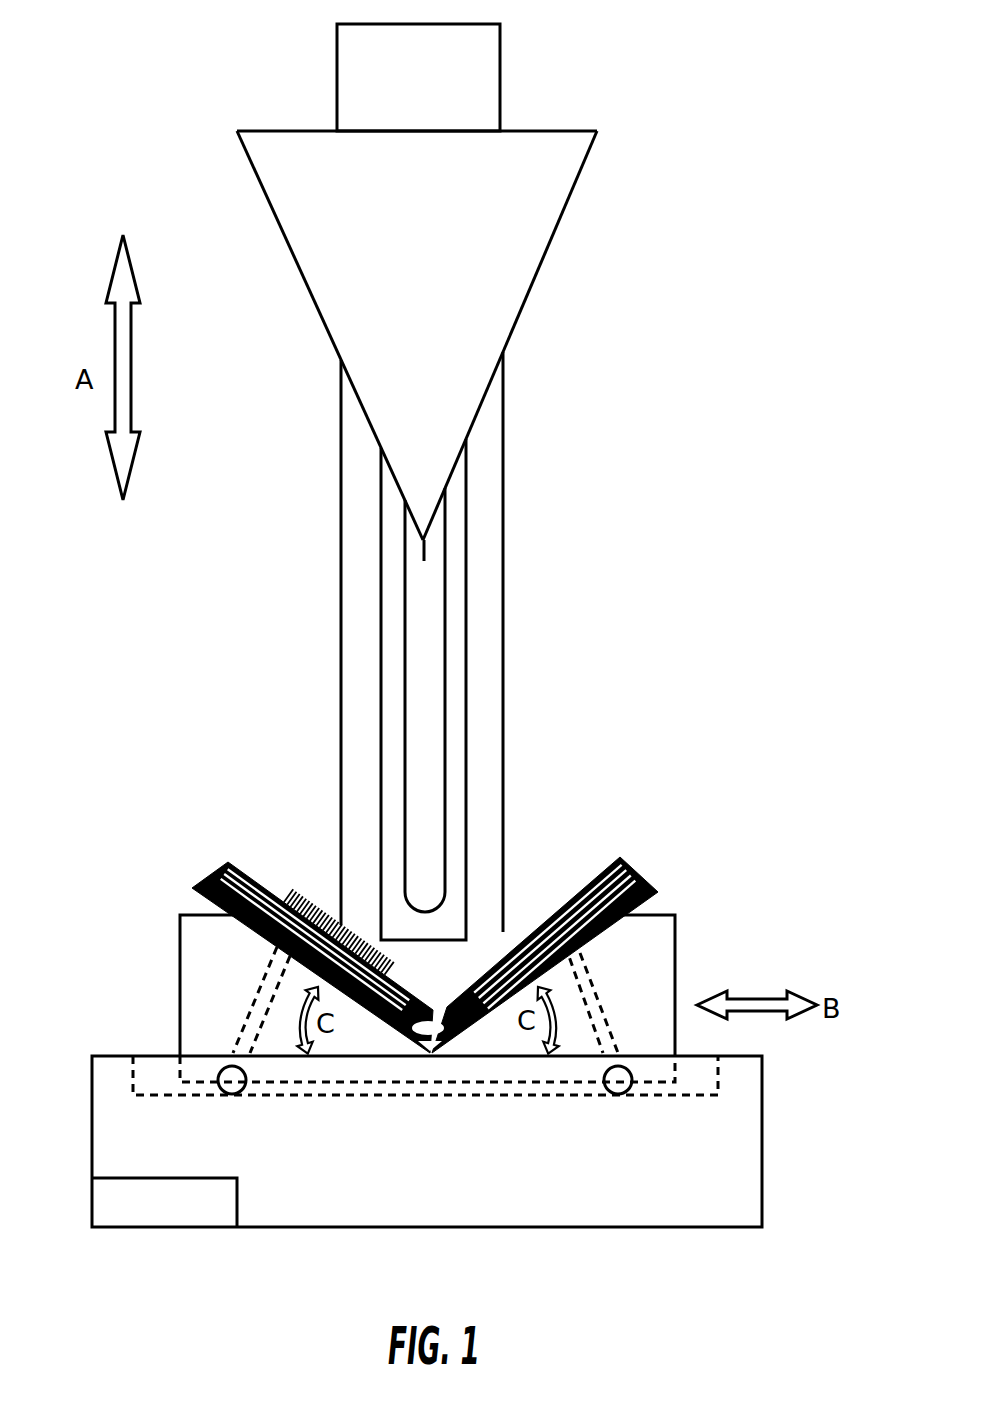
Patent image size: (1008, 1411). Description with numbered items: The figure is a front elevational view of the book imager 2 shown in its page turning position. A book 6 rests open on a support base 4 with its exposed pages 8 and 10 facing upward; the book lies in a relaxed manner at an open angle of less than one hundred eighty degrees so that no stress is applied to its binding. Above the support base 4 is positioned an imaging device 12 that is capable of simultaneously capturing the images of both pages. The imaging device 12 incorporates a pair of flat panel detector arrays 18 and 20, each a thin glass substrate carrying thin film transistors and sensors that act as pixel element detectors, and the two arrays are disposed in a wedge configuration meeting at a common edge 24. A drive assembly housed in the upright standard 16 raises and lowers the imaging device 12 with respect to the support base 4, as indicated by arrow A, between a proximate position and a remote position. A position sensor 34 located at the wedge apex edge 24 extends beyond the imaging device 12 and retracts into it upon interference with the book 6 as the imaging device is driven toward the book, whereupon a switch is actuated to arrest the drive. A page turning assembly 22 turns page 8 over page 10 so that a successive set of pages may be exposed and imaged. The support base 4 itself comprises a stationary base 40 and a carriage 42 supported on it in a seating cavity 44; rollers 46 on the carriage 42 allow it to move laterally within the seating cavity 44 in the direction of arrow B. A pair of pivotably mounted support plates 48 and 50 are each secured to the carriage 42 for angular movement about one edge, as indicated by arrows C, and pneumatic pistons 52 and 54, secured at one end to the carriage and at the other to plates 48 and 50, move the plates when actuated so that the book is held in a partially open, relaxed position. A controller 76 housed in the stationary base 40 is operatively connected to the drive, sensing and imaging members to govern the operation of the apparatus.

The book imager 2 is at (213, 73).
The support base 4 is at (489, 968).
The book 6 is at (451, 888).
The exposed page 8 is at (600, 858).
The exposed page 10 is at (238, 866).
The imaging device 12 is at (450, 311).
The upright standard 16 is at (512, 688).
The flat panel detector array 18 is at (530, 285).
The flat panel detector array 20 is at (312, 296).
The page turning assembly 22 is at (298, 874).
The common edge 24 is at (422, 543).
The position sensor 34 is at (426, 547).
The stationary base 40 is at (763, 1140).
The carriage 42 is at (675, 958).
The seating cavity 44 is at (157, 1092).
The rollers 46 is at (232, 1094).
The support plate 48 is at (598, 938).
The support plate 50 is at (250, 938).
The pneumatic piston 52 is at (598, 1010).
The pneumatic piston 54 is at (250, 998).
The controller 76 is at (148, 1200).